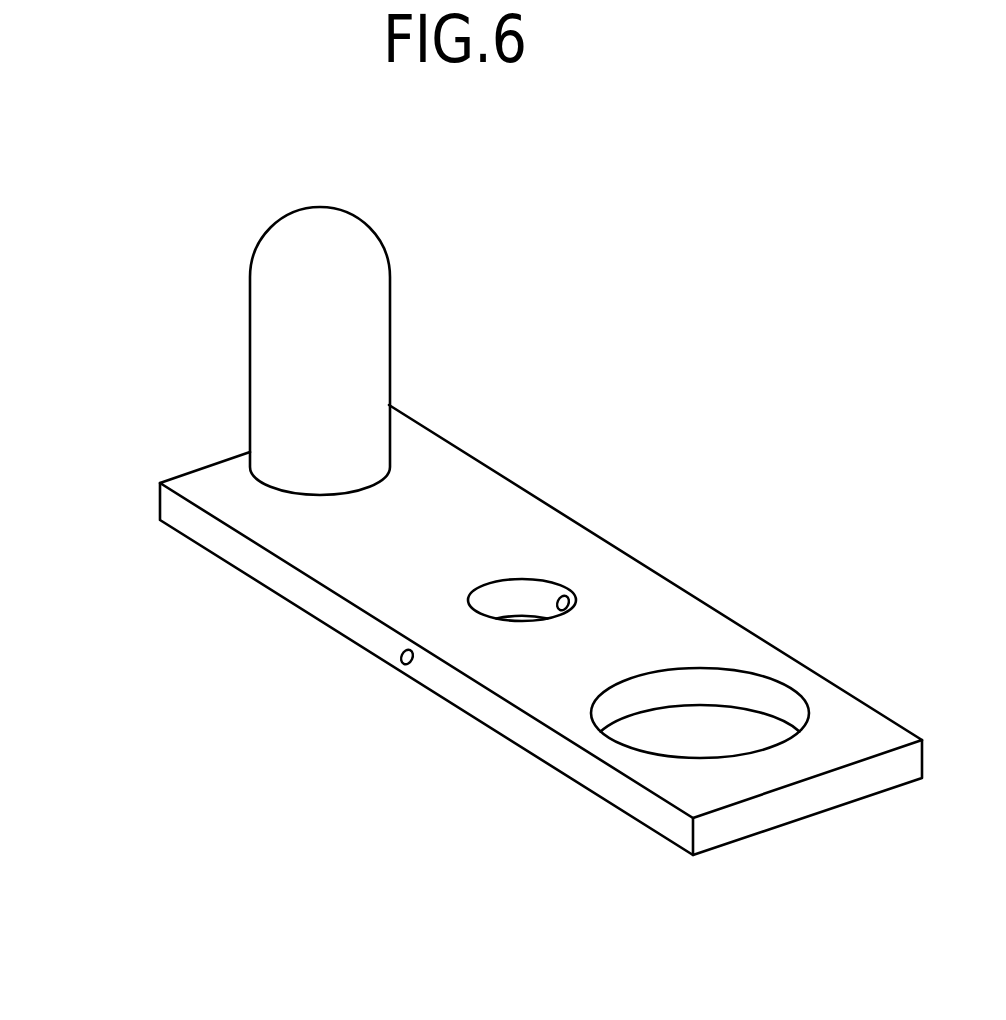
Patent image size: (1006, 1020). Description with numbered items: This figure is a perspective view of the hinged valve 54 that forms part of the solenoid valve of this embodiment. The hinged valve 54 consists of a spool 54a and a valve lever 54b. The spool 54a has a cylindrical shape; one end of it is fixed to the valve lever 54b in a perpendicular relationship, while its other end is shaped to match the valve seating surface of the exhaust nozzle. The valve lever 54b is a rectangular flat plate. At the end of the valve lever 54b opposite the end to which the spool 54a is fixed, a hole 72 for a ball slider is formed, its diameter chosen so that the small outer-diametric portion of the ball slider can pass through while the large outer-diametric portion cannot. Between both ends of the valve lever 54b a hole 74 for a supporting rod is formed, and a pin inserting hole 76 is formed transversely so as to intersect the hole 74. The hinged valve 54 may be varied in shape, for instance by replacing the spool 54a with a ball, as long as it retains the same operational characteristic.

The hinged valve 54 is at (752, 361).
The spool 54a is at (272, 258).
The valve lever 54b is at (357, 577).
The hole for a ball slider 72 is at (702, 722).
The hole for a supporting rod 74 is at (518, 593).
The pin inserting hole 76 is at (562, 607).